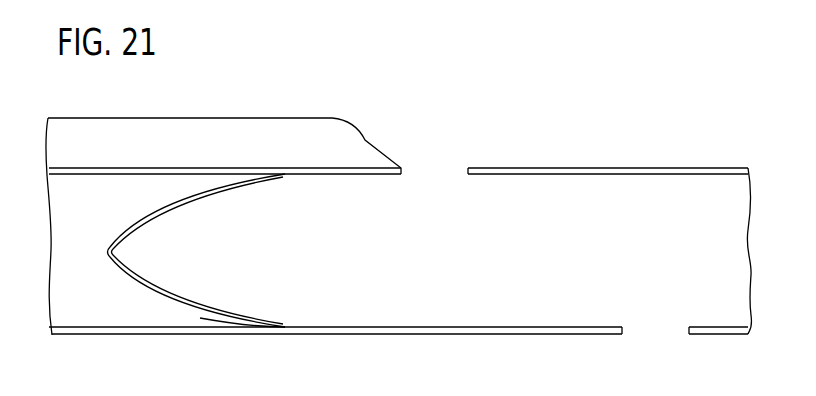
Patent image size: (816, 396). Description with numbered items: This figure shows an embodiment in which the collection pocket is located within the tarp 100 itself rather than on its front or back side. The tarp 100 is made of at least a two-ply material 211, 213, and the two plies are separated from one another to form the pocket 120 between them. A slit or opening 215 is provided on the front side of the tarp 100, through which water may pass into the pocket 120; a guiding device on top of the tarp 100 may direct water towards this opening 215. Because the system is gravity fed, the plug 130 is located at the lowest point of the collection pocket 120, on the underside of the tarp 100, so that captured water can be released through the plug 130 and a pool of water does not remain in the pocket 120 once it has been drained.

The tarp 100 is at (128, 336).
The collection pocket 120 is at (487, 267).
The plug 130 is at (657, 329).
The ply of two-ply material 211 is at (272, 336).
The ply of two-ply material 213 is at (274, 169).
The slit or opening 215 is at (436, 175).